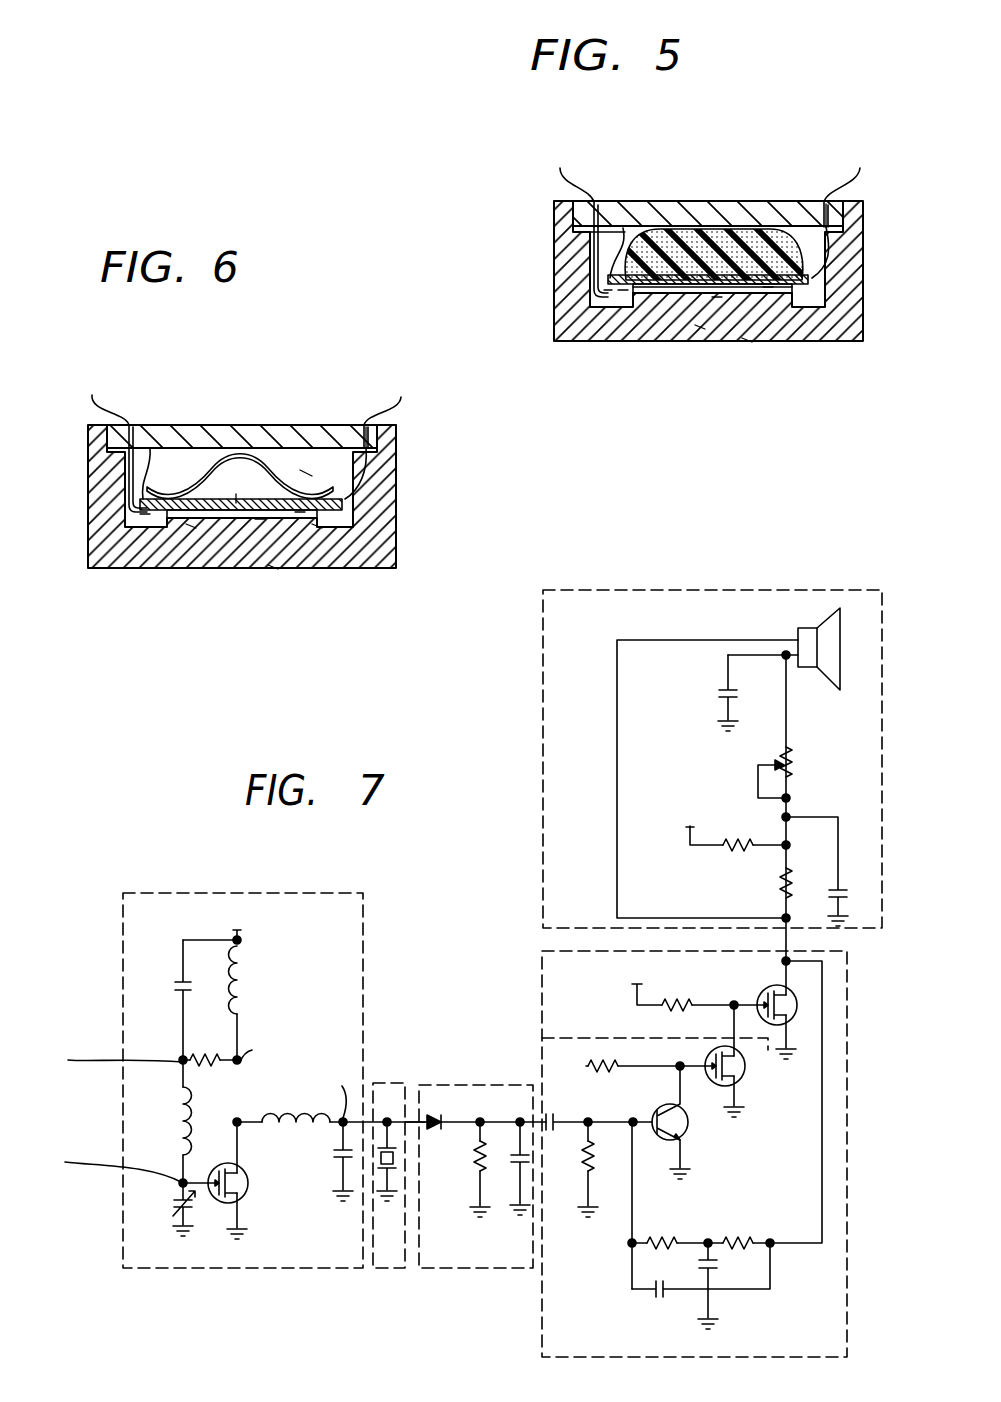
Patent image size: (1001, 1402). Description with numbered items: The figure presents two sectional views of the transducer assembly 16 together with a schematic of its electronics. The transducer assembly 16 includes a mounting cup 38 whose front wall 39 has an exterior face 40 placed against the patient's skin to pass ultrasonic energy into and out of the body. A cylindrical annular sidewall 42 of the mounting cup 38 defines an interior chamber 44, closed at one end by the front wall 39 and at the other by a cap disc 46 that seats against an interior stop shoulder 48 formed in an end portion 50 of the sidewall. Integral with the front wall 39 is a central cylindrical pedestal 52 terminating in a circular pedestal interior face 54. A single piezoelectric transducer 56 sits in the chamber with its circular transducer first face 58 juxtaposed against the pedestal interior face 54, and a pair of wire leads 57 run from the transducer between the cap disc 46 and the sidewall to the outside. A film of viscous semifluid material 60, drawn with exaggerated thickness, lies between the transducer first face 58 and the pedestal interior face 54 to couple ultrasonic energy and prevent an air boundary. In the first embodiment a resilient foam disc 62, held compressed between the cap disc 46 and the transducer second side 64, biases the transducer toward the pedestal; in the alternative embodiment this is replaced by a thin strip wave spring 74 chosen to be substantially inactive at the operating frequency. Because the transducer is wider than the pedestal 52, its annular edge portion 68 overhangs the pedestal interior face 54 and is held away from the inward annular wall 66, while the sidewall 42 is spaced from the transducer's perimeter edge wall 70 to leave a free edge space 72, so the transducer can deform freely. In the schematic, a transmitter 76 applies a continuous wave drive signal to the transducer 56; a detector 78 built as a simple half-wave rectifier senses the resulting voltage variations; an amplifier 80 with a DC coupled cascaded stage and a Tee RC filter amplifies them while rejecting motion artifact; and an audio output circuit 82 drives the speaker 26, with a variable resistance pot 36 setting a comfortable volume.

In FIG. 5, the transducer assembly 16 is at (783, 120).
In FIG. 6, the transducer assembly 16 is at (360, 362).
In FIG. 7, the speaker 26 is at (840, 662).
In FIG. 7, the variable resistance pot 36 is at (790, 762).
In FIG. 5, the mounting cup 38 is at (863, 277).
In FIG. 6, the mounting cup 38 is at (397, 550).
In FIG. 5, the front wall 39 is at (700, 327).
In FIG. 6, the front wall 39 is at (192, 527).
In FIG. 5, the exterior face 40 is at (747, 340).
In FIG. 6, the exterior face 40 is at (273, 570).
In FIG. 5, the annular sidewall 42 is at (562, 273).
In FIG. 6, the annular sidewall 42 is at (390, 508).
In FIG. 5, the interior chamber 44 is at (630, 232).
In FIG. 6, the interior chamber 44 is at (303, 473).
In FIG. 5, the cap disc 46 is at (703, 210).
In FIG. 6, the cap disc 46 is at (250, 440).
In FIG. 5, the interior stop shoulder 48 is at (827, 218).
In FIG. 6, the interior stop shoulder 48 is at (365, 450).
In FIG. 5, the end portion 50 is at (560, 207).
In FIG. 6, the end portion 50 is at (390, 438).
In FIG. 5, the pedestal 52 is at (678, 297).
In FIG. 6, the pedestal 52 is at (157, 512).
In FIG. 5, the pedestal interior face 54 is at (760, 284).
In FIG. 6, the pedestal interior face 54 is at (300, 513).
In FIG. 5, the piezoelectric transducer 56 is at (623, 292).
In FIG. 6, the piezoelectric transducer 56 is at (240, 485).
In FIG. 7, the piezoelectric transducer 56 is at (383, 1165).
In FIG. 5, the wire leads 57 is at (556, 172).
In FIG. 6, the wire leads 57 is at (92, 395).
In FIG. 5, the transducer first face 58 is at (768, 286).
In FIG. 6, the transducer first face 58 is at (317, 527).
In FIG. 5, the viscous semifluid material 60 is at (717, 297).
In FIG. 6, the viscous semifluid material 60 is at (260, 520).
In FIG. 5, the resilient foam disc 62 is at (753, 245).
In FIG. 5, the second side 64 is at (623, 232).
In FIG. 6, the second side 64 is at (143, 487).
In FIG. 5, the inward annular wall 66 is at (597, 300).
In FIG. 6, the inward annular wall 66 is at (117, 530).
In FIG. 5, the annular edge portion 68 is at (608, 292).
In FIG. 6, the annular edge portion 68 is at (147, 513).
In FIG. 5, the perimeter edge wall 70 is at (767, 283).
In FIG. 6, the perimeter edge wall 70 is at (335, 512).
In FIG. 5, the free edge space 72 is at (818, 276).
In FIG. 6, the free edge space 72 is at (352, 497).
In FIG. 6, the wave spring 74 is at (193, 480).
In FIG. 7, the transmitter 76 is at (398, 910).
In FIG. 7, the detector 78 is at (512, 1268).
In FIG. 7, the amplifier 80 is at (542, 980).
In FIG. 7, the audio output circuit 82 is at (543, 700).